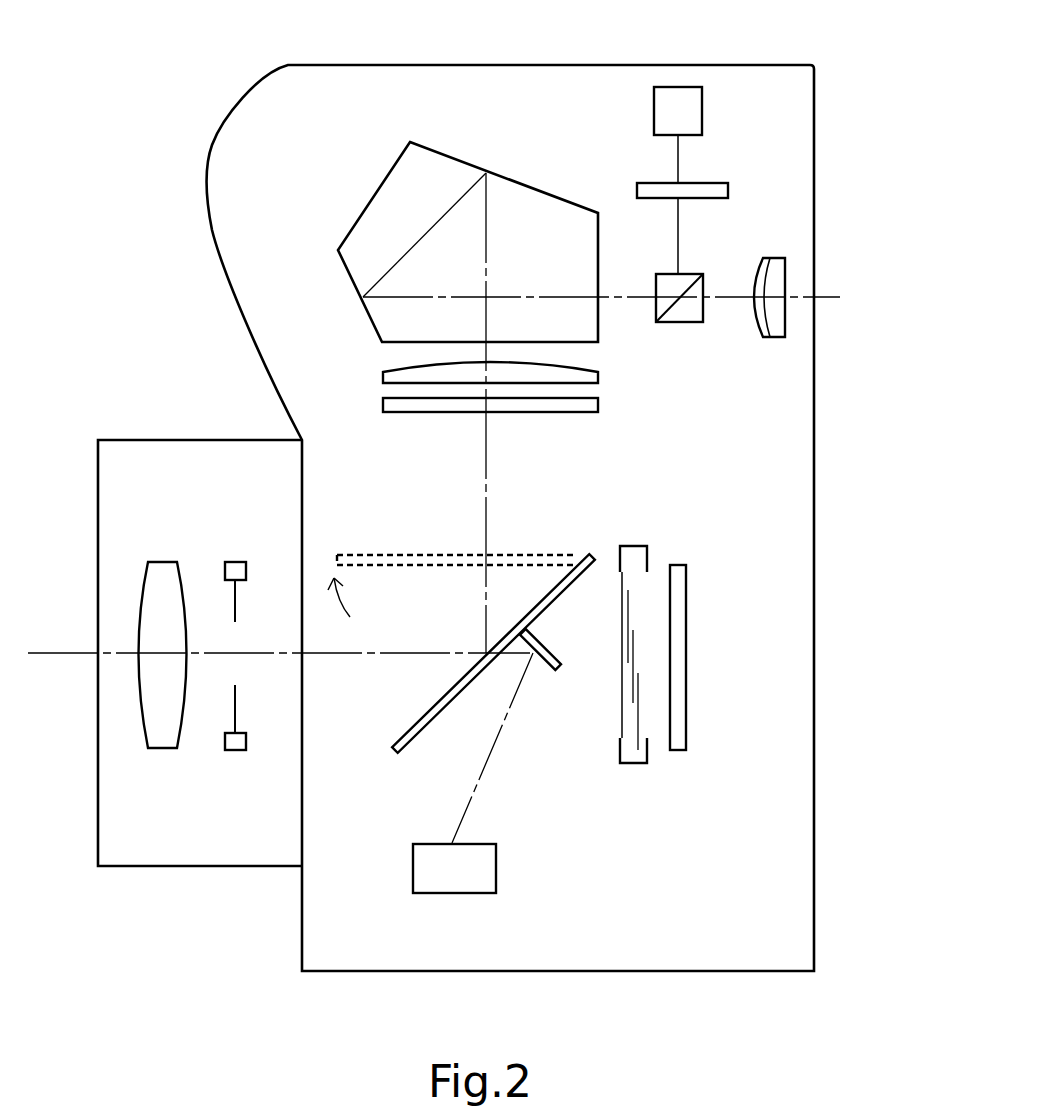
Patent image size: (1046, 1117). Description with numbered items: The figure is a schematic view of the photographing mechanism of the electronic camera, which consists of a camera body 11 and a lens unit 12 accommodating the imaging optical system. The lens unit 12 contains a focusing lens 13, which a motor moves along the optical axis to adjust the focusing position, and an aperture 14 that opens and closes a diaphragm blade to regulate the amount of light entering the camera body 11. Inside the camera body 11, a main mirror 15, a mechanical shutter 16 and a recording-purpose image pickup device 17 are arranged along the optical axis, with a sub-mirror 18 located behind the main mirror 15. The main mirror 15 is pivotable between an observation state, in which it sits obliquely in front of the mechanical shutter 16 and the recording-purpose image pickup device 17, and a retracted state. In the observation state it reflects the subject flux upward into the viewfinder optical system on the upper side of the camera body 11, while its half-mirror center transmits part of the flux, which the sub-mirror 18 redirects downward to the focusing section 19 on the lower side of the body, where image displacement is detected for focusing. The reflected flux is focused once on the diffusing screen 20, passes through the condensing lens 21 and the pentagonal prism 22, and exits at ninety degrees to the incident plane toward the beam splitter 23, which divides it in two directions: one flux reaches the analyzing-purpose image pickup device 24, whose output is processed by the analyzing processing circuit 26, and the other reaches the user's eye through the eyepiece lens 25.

The camera body 11 is at (820, 86).
The lens unit 12 is at (100, 852).
The focusing lens 13 is at (157, 562).
The aperture 14 is at (235, 562).
The main mirror 15 is at (395, 750).
The mechanical shutter 16 is at (620, 748).
The recording-purpose image pickup device 17 is at (678, 565).
The sub-mirror 18 is at (556, 668).
The focusing section 19 is at (497, 870).
The diffusing screen 20 is at (550, 412).
The condensing lens 21 is at (383, 372).
The pentagonal prism 22 is at (383, 183).
The beam splitter 23 is at (678, 324).
The analyzing-purpose image pickup device 24 is at (720, 183).
The eyepiece lens 25 is at (770, 339).
The analyzing processing circuit 26 is at (678, 87).